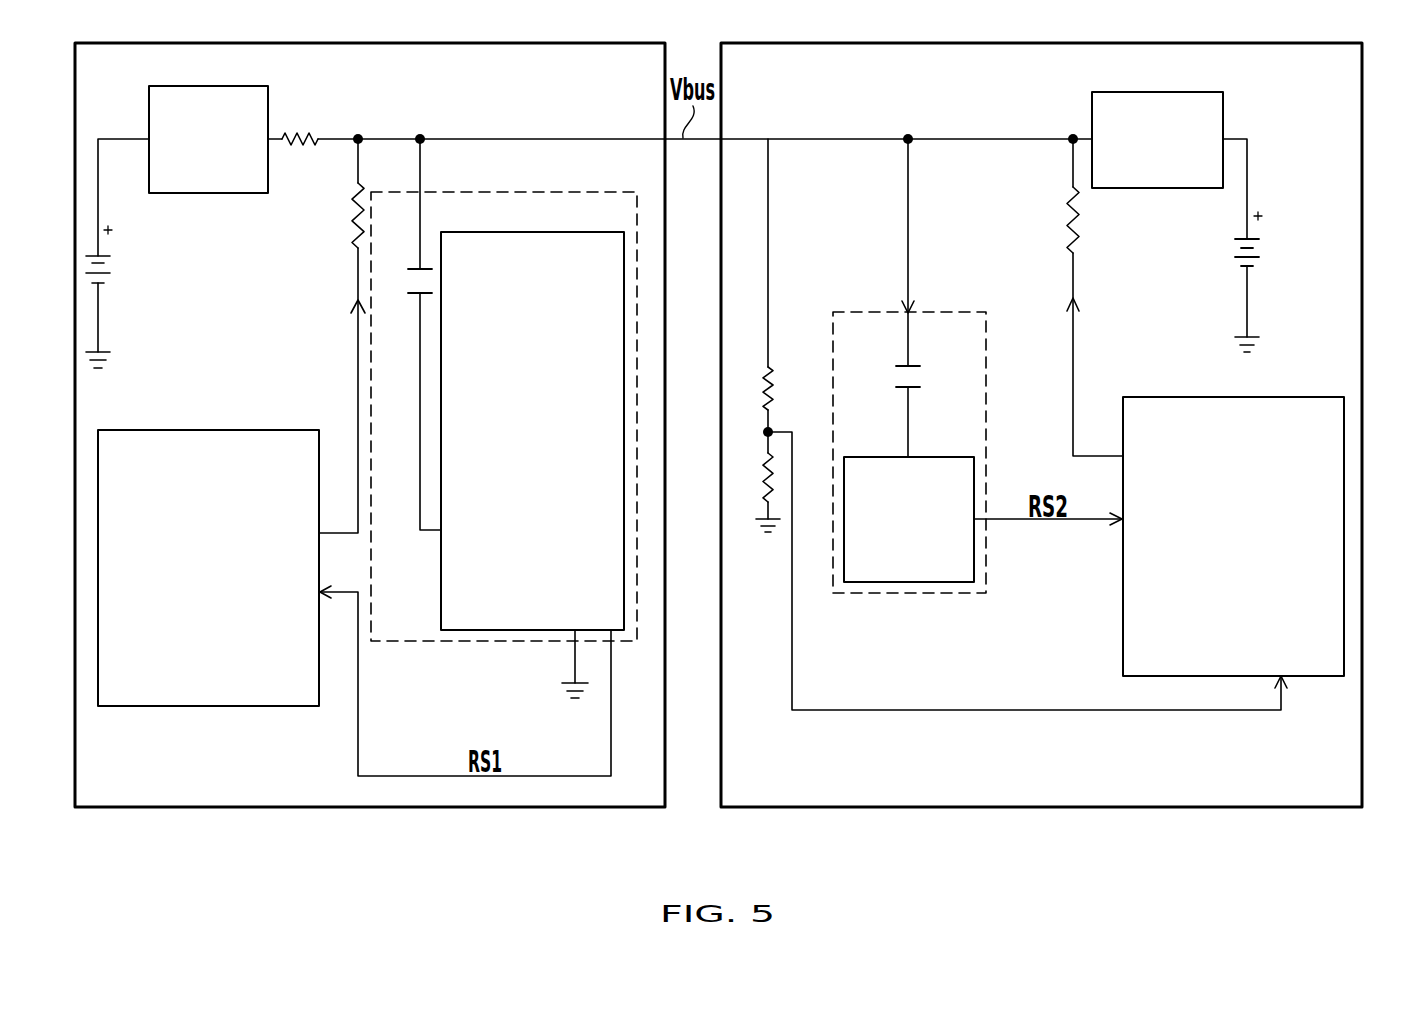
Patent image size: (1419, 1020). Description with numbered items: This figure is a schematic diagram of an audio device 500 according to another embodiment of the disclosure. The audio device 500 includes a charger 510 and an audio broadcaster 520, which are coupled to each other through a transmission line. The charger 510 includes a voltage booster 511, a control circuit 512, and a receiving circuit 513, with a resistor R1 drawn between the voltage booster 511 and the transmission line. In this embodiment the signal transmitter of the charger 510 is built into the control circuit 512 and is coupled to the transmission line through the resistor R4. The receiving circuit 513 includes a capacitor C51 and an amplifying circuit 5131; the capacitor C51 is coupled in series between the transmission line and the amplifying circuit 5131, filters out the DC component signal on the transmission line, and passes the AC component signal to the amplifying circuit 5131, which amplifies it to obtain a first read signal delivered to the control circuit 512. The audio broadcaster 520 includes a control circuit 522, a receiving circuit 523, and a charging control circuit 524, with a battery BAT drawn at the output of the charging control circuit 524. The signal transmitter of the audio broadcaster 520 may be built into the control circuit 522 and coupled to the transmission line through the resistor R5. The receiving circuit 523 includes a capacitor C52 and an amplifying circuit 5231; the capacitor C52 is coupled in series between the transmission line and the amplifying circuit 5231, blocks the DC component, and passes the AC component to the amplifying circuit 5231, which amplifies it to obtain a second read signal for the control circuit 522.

The audio device 500 is at (718, 422).
The charger 510 is at (372, 43).
The voltage booster 511 is at (210, 86).
The control circuit 512 is at (210, 430).
The receiving circuit 513 is at (503, 192).
The amplifying circuit 5131 is at (533, 232).
The audio broadcaster 520 is at (1043, 43).
The control circuit 522 is at (1234, 397).
The receiving circuit 523 is at (897, 593).
The amplifying circuit 5231 is at (975, 553).
The charging control circuit 524 is at (1158, 92).
The resistor R1 is at (300, 122).
The resistor R4 is at (343, 215).
The resistor R5 is at (1087, 220).
The capacitor C51 is at (402, 282).
The capacitor C52 is at (929, 376).
The battery BAT is at (1268, 254).